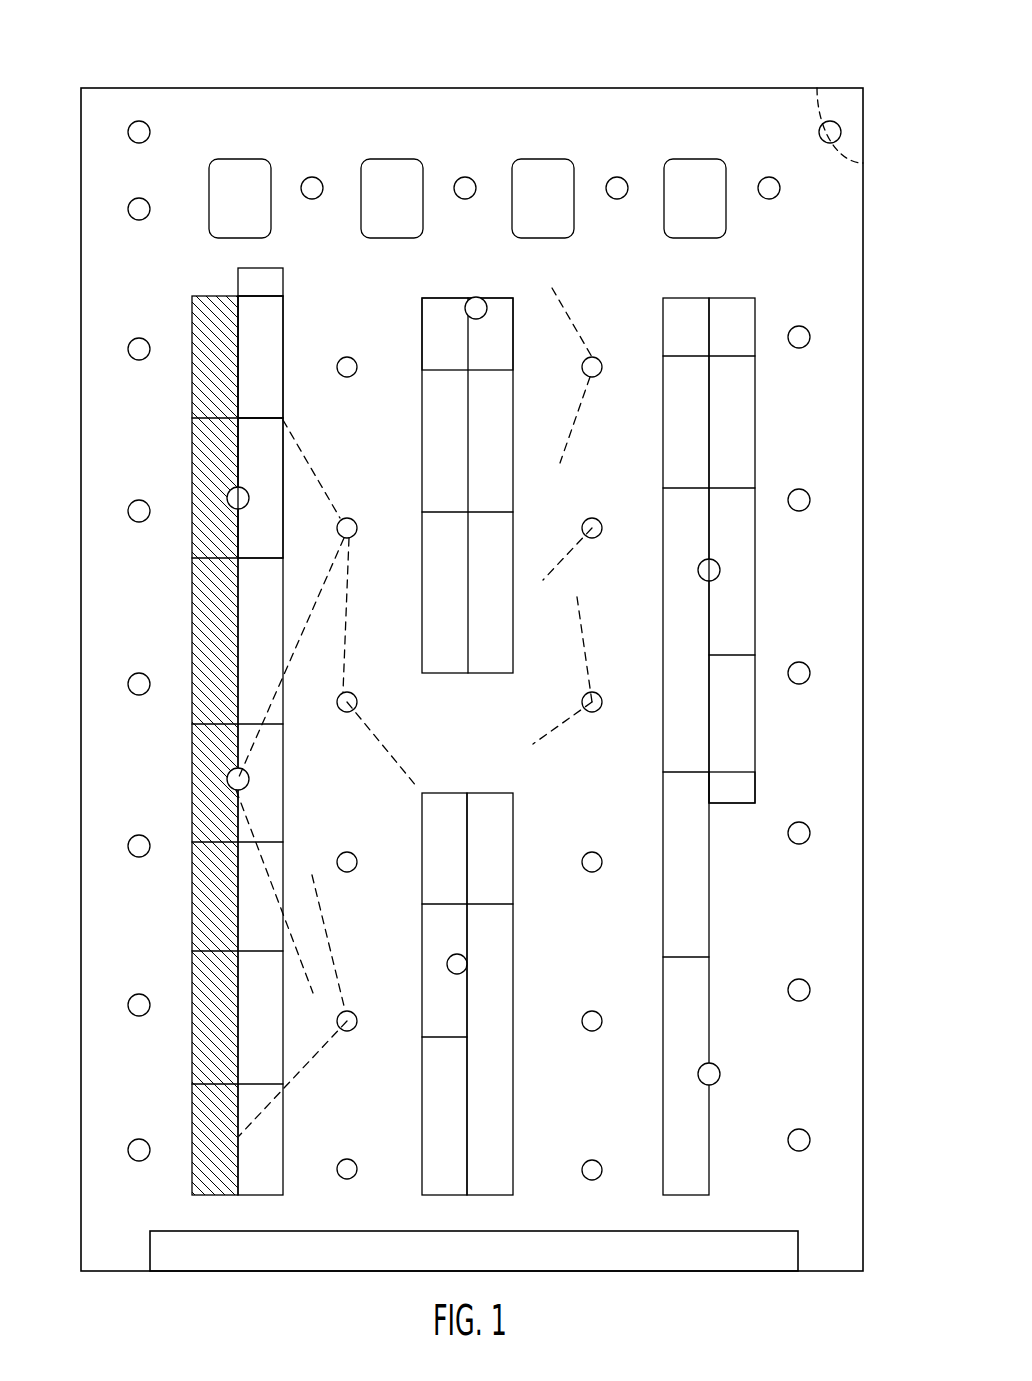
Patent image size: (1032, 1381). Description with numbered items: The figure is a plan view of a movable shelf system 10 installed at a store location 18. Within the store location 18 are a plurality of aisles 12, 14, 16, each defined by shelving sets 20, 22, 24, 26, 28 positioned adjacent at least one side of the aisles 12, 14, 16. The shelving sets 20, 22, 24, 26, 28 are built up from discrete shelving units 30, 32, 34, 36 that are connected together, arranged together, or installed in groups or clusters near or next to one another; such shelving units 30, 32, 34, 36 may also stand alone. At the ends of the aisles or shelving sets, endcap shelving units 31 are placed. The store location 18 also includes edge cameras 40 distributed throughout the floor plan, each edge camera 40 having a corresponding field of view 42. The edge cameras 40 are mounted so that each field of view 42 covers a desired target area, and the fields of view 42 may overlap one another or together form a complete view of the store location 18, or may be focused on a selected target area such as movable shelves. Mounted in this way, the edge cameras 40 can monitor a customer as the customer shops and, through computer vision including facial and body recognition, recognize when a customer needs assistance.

The movable shelf system 10 is at (662, 50).
The aisle 12 is at (375, 809).
The aisle 14 is at (602, 786).
The aisle 16 is at (803, 753).
The store location 18 is at (535, 88).
The shelving set 20 is at (257, 1195).
The shelving set 22 is at (435, 1195).
The shelving set 24 is at (494, 1195).
The shelving set 26 is at (671, 1195).
The shelving set 28 is at (709, 1195).
The shelving unit 30 is at (271, 459).
The endcap shelving unit 31 is at (271, 294).
The shelving unit 32 is at (271, 362).
The shelving unit 34 is at (453, 459).
The shelving unit 36 is at (453, 364).
The edge camera 40 is at (347, 357).
The field of view 42 is at (343, 640).